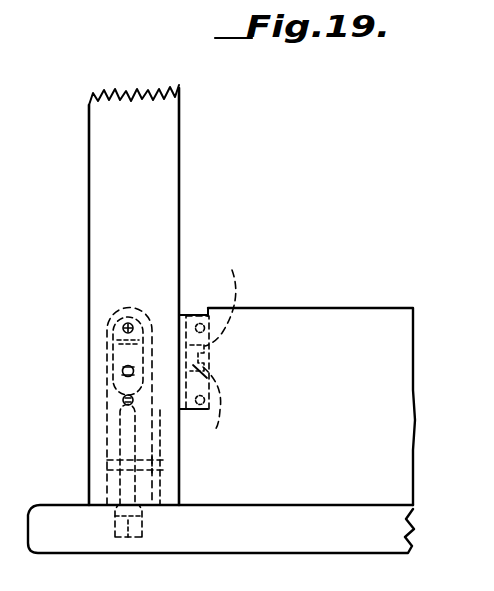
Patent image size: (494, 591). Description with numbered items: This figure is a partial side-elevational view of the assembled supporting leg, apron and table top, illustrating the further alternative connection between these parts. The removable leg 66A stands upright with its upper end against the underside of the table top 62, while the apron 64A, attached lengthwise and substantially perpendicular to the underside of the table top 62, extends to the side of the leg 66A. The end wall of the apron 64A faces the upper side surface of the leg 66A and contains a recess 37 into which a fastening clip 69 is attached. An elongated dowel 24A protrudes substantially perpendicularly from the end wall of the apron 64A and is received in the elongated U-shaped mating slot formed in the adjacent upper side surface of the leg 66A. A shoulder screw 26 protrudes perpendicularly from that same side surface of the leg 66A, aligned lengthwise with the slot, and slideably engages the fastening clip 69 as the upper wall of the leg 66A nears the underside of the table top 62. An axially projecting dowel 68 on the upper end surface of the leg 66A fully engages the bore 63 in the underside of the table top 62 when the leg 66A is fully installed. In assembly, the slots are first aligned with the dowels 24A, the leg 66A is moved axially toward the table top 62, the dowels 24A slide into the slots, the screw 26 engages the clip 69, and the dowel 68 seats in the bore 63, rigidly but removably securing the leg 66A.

The leg 66A is at (160, 157).
The apron 64A is at (328, 325).
The recess 37 is at (211, 337).
The fastening clip 69 is at (147, 340).
The shoulder screw 26 is at (135, 367).
The elongated dowel 24A is at (120, 469).
The axially projecting dowel 68 is at (130, 523).
The table top 62 is at (238, 534).
The bore 63 is at (122, 523).